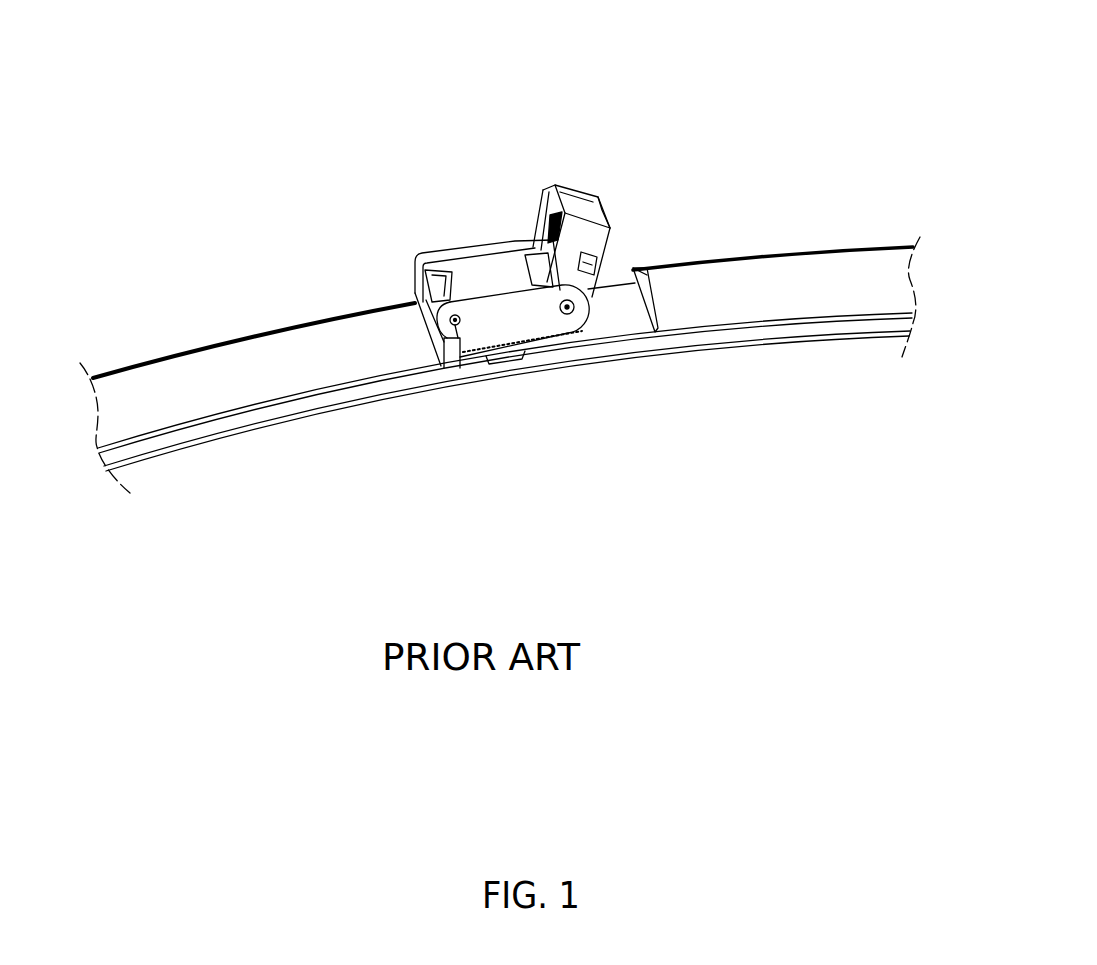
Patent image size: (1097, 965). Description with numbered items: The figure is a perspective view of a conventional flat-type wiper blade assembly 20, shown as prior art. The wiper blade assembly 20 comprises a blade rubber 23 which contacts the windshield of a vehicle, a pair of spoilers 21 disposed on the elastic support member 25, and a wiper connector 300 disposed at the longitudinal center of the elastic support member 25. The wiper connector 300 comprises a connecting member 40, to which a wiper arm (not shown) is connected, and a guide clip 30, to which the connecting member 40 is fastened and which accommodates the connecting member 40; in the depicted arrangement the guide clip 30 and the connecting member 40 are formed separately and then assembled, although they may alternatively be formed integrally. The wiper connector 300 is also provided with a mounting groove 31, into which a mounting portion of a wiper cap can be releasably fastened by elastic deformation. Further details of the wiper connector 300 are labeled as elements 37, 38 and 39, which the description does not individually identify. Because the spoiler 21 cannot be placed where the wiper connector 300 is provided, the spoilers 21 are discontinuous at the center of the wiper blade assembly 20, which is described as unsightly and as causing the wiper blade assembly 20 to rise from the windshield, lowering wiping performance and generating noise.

The wiper blade assembly 20 is at (400, 452).
The spoiler 21 is at (270, 345).
The blade rubber 23 is at (242, 420).
The elastic support member 25 is at (620, 303).
The guide clip 30 is at (533, 328).
The mounting groove 31 is at (512, 357).
The small hole 37 is at (452, 362).
The rear bracket 38 is at (513, 245).
The large hole 39 is at (573, 308).
The connecting member 40 is at (583, 210).
The wiper connector 300 is at (414, 212).